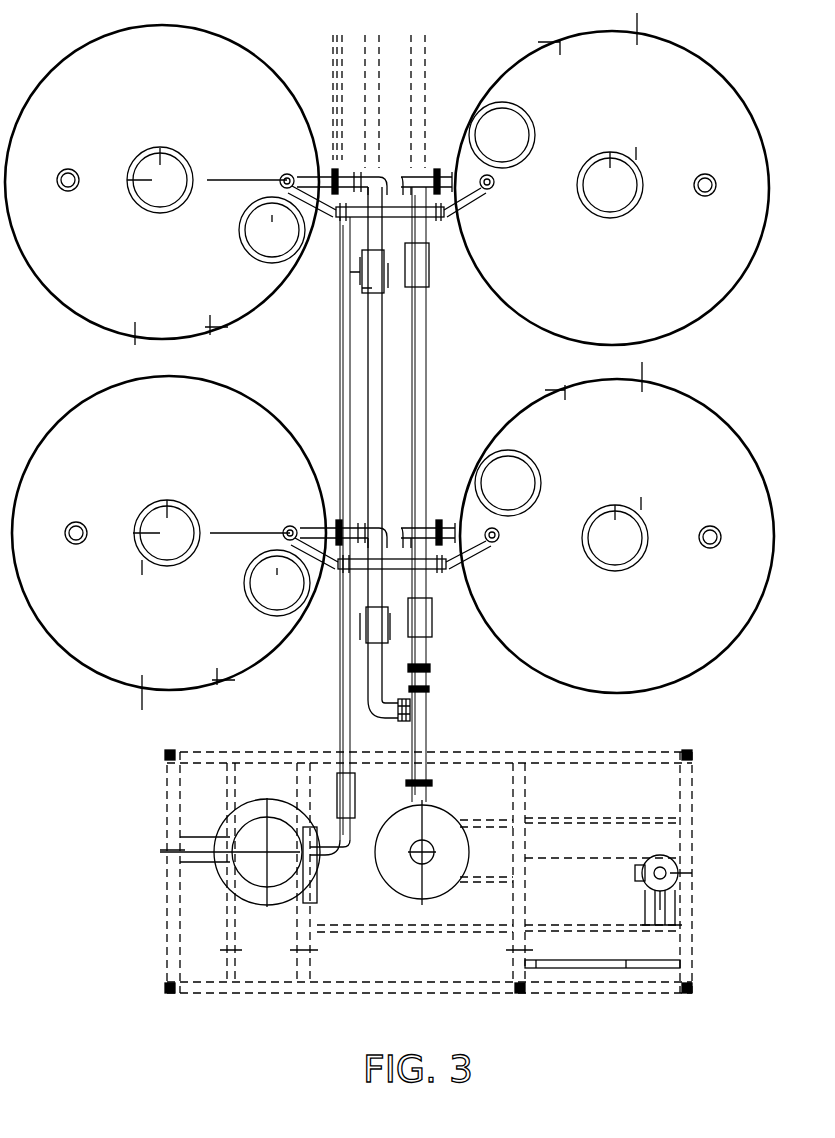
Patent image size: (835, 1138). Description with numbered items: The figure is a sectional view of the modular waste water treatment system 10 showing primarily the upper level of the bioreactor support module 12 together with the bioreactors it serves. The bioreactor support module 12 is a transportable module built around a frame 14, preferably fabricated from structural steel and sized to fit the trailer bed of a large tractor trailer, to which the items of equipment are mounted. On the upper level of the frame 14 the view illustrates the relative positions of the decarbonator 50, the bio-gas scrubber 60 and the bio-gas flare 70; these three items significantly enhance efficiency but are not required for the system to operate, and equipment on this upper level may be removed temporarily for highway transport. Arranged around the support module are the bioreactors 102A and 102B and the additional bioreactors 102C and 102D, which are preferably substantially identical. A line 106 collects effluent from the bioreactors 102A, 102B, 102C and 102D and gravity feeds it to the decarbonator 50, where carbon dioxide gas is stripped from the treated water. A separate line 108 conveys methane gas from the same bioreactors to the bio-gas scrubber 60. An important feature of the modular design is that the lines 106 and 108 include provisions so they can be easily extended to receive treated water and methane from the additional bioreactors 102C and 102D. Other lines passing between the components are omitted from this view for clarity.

The modular waste water treatment system 10 is at (758, 61).
The bioreactor support module 12 is at (142, 818).
The frame 14 is at (167, 905).
The decarbonator 50 is at (436, 888).
The bio-gas scrubber 60 is at (280, 866).
The bio-gas flare 70 is at (670, 858).
The line 106 is at (430, 740).
The line 108 is at (340, 720).
The bioreactor 102A is at (196, 627).
The bioreactor 102B is at (644, 624).
The additional bioreactor 102C is at (189, 273).
The additional bioreactor 102D is at (641, 267).